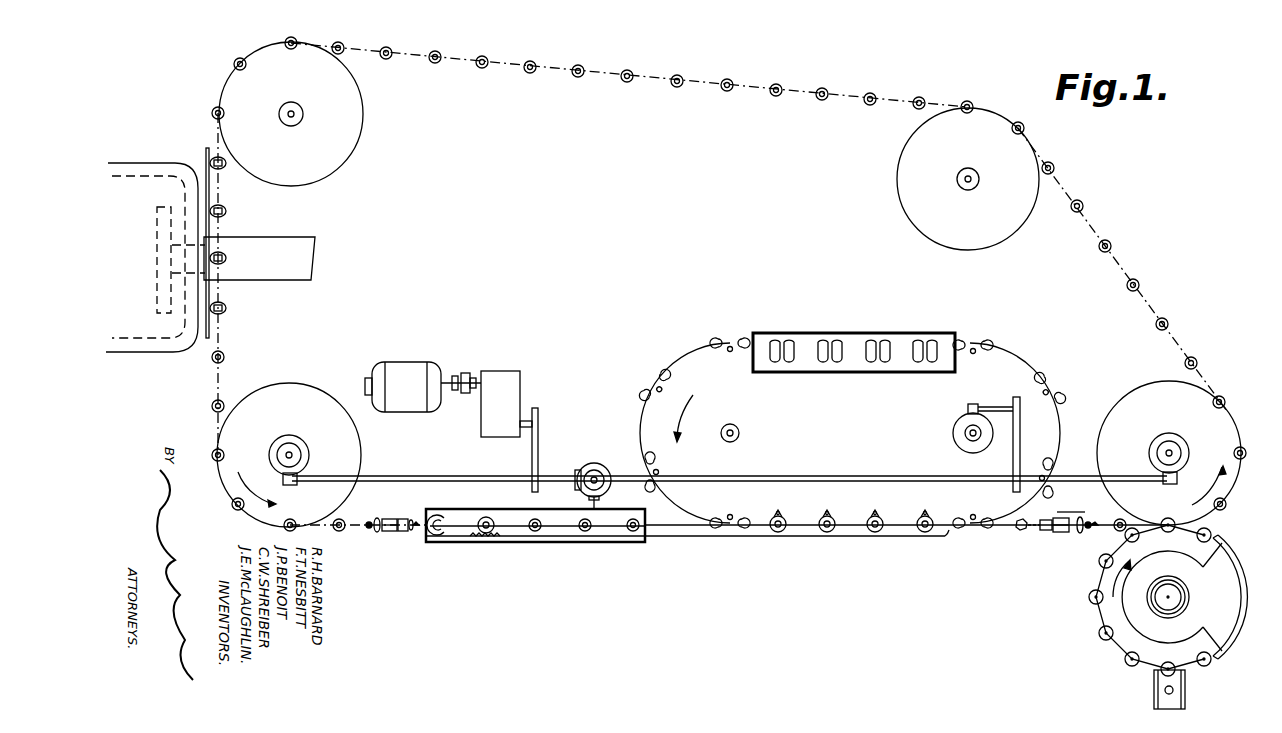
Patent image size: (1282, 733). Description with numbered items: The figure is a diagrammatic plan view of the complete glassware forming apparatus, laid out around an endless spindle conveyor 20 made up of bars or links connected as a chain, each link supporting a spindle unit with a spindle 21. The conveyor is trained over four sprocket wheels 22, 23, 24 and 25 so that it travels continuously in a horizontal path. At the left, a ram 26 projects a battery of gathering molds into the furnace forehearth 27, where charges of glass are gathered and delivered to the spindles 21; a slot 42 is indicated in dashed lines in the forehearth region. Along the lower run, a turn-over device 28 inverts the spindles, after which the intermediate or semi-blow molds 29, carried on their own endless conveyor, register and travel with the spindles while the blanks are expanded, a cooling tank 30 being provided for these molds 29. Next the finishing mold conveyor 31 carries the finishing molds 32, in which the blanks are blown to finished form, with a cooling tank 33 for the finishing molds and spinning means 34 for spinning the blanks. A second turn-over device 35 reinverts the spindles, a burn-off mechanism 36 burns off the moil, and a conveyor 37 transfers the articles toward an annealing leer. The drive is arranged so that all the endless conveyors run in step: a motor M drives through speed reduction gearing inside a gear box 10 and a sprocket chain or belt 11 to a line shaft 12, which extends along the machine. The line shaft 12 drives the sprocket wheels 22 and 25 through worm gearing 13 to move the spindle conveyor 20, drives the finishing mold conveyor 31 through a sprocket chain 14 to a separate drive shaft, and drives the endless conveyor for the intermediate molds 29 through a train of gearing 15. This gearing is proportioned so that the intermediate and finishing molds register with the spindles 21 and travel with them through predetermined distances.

The gear box 10 is at (522, 380).
The sprocket chain or belt 11 is at (540, 452).
The line shaft 12 is at (822, 477).
The worm gearing 13 is at (292, 485).
The sprocket chain 14 is at (1022, 445).
The train of gearing 15 is at (585, 491).
The spindle conveyor 20 is at (645, 78).
The spindle 21 is at (487, 58).
The sprocket wheel 22 is at (1148, 392).
The sprocket wheel 23 is at (1015, 232).
The sprocket wheel 24 is at (352, 135).
The sprocket wheel 25 is at (353, 438).
The ram 26 is at (280, 275).
The furnace forehearth 27 is at (157, 350).
The turn-over device 28 is at (396, 512).
The intermediate or semi-blow molds 29 is at (450, 511).
The cooling tank 30 is at (631, 509).
The finishing mold conveyor 31 is at (688, 362).
The finishing molds 32 is at (648, 468).
The cooling tank 33 is at (818, 334).
The spinning means 34 is at (774, 537).
The turn-over device 35 is at (1082, 500).
The burn-off mechanism 36 is at (1218, 566).
The conveyor 37 is at (1160, 690).
The slot 42 is at (160, 240).
The motor M is at (406, 365).